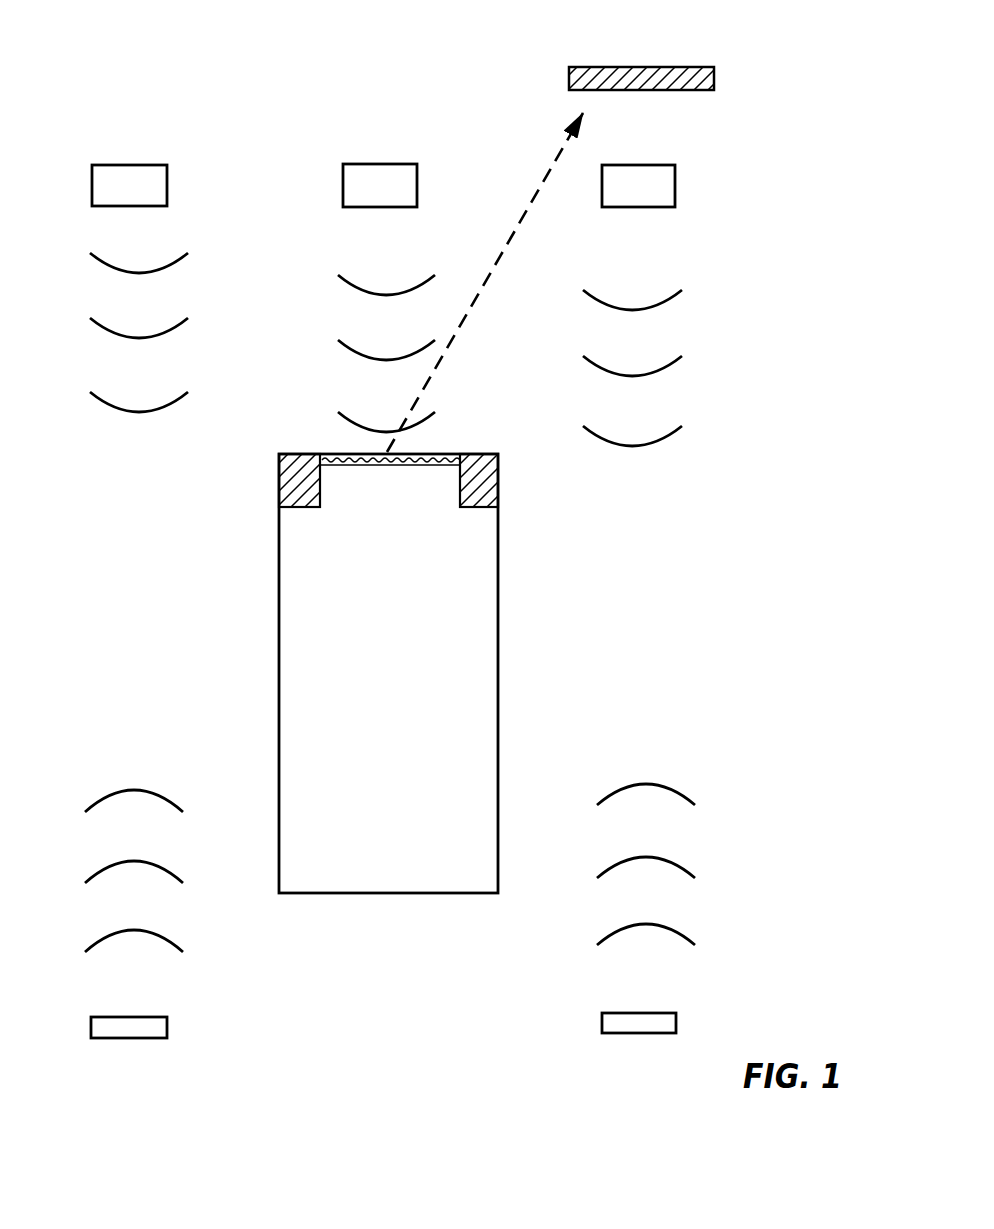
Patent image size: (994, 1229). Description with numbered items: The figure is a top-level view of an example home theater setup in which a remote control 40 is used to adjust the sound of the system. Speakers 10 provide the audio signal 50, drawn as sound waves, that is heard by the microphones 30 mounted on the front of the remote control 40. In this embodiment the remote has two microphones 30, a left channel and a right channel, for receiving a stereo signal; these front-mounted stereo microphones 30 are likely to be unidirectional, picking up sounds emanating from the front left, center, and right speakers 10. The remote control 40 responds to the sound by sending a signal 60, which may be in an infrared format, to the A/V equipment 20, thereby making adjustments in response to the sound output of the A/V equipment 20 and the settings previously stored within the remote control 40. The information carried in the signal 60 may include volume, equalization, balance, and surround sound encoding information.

The speakers 10 is at (123, 165).
The A/V equipment 20 is at (662, 67).
The microphones 30 is at (473, 452).
The remote control 40 is at (473, 893).
The audio signal 50 is at (713, 389).
The signal 60 is at (525, 180).